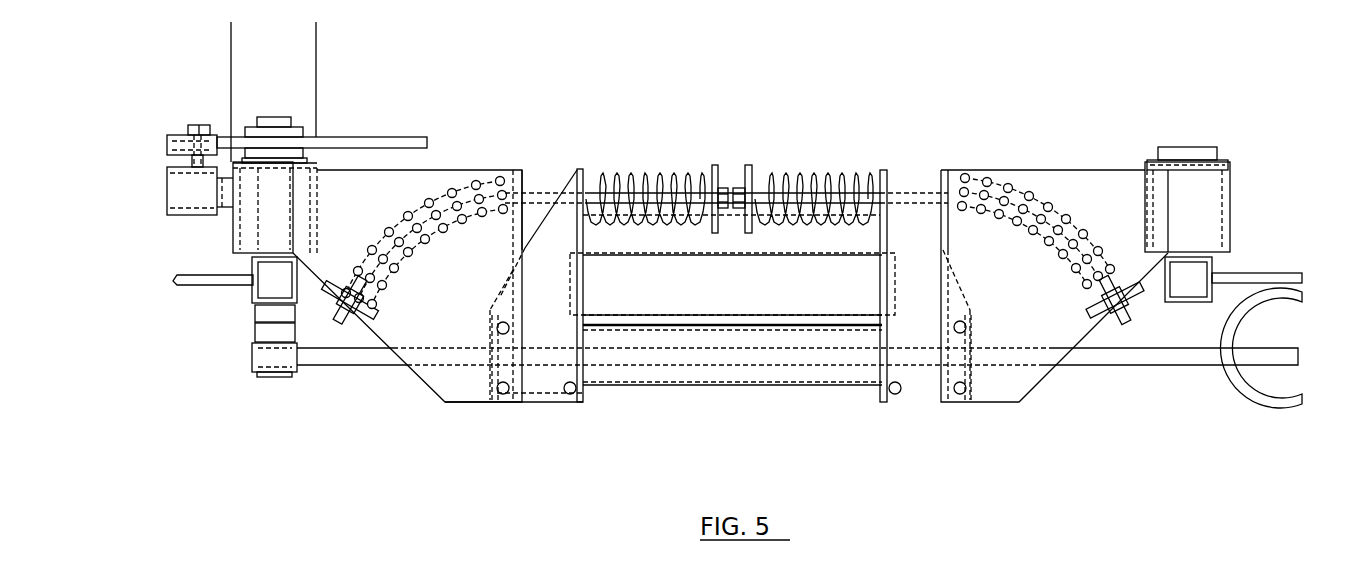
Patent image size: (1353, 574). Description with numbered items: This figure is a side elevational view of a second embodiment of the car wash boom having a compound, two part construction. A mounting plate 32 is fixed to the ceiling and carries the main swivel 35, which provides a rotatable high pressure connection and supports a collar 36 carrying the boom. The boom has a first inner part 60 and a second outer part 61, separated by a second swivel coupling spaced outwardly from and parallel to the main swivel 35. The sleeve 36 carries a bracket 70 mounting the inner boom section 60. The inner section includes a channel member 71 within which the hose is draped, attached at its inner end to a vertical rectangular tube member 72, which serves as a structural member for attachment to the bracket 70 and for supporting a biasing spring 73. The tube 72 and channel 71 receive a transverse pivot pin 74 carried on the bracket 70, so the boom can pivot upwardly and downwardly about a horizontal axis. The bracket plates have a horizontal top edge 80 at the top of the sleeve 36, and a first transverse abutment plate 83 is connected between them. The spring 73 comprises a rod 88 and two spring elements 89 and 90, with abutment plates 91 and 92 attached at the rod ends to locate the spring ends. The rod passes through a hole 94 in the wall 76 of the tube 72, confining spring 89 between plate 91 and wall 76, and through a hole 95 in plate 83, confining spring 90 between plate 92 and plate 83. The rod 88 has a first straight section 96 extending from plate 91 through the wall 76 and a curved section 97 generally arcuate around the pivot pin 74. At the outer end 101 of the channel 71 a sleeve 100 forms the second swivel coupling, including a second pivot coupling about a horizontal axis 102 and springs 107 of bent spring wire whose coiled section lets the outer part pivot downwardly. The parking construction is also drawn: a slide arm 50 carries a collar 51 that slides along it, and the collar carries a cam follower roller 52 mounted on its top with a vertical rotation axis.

The plate 32 is at (400, 137).
The swivel 35 is at (297, 70).
The collar 36 is at (233, 253).
The slide arm 50 is at (195, 197).
The collar 51 is at (203, 207).
The cam follower roller 52 is at (214, 140).
The first inner part 60 is at (818, 132).
The second outer part 61 is at (1248, 246).
The bracket 70 is at (427, 182).
The channel member 71 is at (667, 380).
The rectangular tube member 72 is at (593, 382).
The biasing spring 73 is at (624, 190).
The transverse pivot pin 74 is at (503, 396).
The wall 76 is at (587, 242).
The horizontal top edge 80 is at (382, 172).
The first transverse abutment plate 83 is at (409, 264).
The rod 88 is at (438, 267).
The spring element 89 is at (514, 421).
The spring element 90 is at (660, 175).
The abutment plate 91 is at (324, 359).
The abutment plate 92 is at (714, 167).
The hole 94 is at (586, 172).
The hole 95 is at (510, 177).
The first straight section 96 is at (622, 215).
The curved section 97 is at (521, 433).
The sleeve 100 is at (1168, 212).
The outer end 101 is at (953, 140).
The horizontal axis 102 is at (953, 393).
The springs 107 is at (1238, 397).